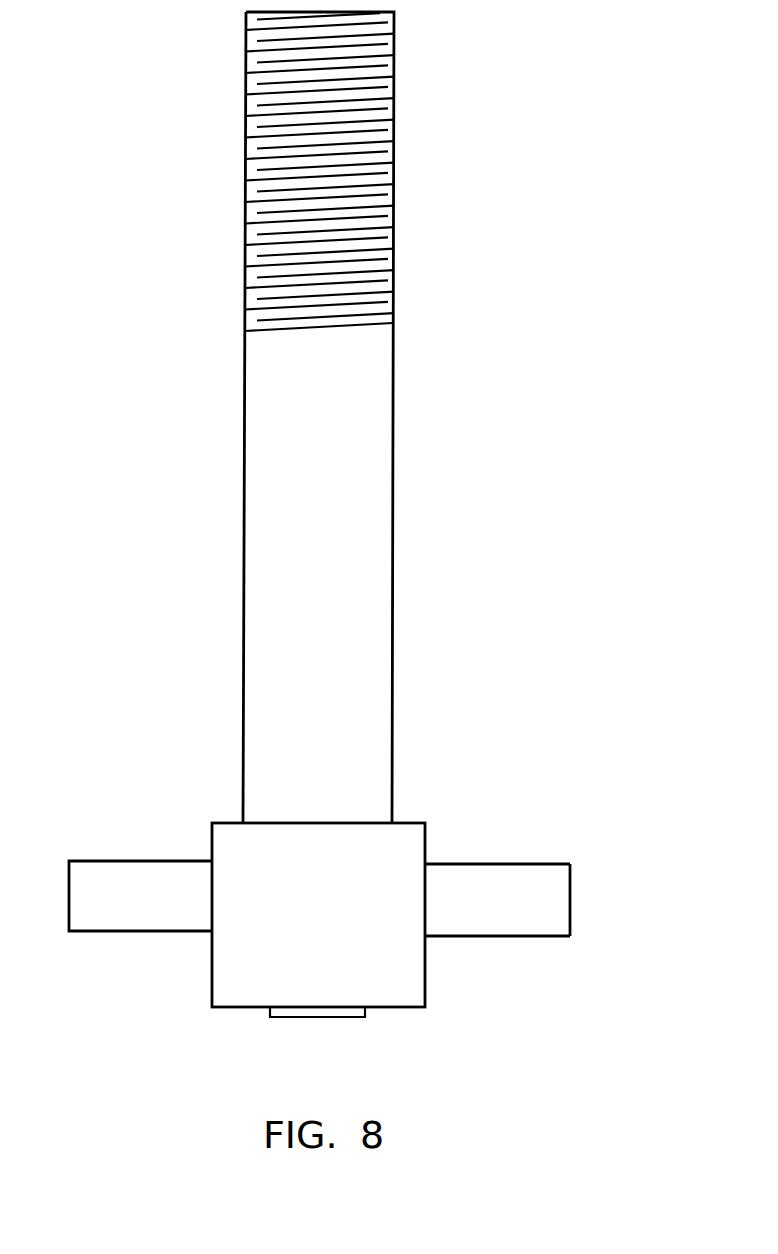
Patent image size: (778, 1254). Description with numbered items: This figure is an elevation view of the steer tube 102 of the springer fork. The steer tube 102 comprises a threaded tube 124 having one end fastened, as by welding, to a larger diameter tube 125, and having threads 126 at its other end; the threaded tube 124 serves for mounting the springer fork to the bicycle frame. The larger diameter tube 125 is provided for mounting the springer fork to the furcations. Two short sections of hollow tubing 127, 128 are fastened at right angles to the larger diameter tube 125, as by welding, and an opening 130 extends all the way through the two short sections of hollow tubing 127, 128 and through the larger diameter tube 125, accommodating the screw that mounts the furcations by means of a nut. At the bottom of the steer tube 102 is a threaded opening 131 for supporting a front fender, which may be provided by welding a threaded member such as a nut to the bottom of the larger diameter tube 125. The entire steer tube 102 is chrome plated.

The steer tube 102 is at (440, 487).
The threaded tube 124 is at (385, 752).
The larger diameter tube 125 is at (417, 838).
The threads 126 is at (392, 33).
The short section of hollow tubing 127 is at (127, 926).
The short section of hollow tubing 128 is at (520, 923).
The opening 130 is at (570, 895).
The threaded opening 131 is at (310, 1018).